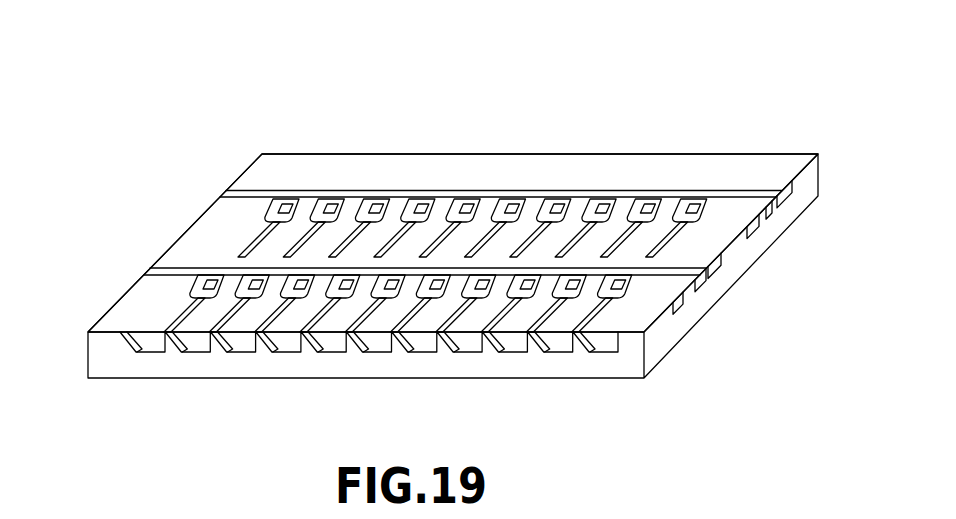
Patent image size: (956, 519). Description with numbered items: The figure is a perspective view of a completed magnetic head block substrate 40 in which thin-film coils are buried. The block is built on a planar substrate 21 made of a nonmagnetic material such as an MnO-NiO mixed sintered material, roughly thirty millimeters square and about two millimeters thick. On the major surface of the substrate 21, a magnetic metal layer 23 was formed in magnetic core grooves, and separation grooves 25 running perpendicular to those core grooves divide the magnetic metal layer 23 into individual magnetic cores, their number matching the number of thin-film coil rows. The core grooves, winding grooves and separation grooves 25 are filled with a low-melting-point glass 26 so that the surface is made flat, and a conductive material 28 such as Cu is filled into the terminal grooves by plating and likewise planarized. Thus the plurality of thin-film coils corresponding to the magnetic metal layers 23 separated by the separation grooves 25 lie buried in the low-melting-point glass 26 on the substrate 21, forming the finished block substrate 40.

The magnetic head block substrate 40 is at (453, 240).
The substrate 21 is at (743, 255).
The magnetic metal layer 23 is at (557, 205).
The separation groove 25 is at (793, 197).
The low-melting-point glass 26 is at (148, 303).
The conductive material 28 is at (178, 272).